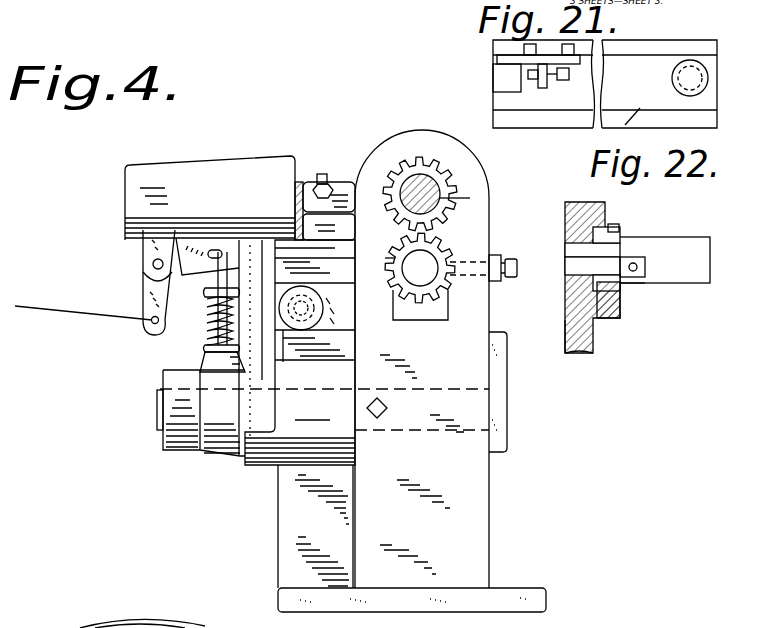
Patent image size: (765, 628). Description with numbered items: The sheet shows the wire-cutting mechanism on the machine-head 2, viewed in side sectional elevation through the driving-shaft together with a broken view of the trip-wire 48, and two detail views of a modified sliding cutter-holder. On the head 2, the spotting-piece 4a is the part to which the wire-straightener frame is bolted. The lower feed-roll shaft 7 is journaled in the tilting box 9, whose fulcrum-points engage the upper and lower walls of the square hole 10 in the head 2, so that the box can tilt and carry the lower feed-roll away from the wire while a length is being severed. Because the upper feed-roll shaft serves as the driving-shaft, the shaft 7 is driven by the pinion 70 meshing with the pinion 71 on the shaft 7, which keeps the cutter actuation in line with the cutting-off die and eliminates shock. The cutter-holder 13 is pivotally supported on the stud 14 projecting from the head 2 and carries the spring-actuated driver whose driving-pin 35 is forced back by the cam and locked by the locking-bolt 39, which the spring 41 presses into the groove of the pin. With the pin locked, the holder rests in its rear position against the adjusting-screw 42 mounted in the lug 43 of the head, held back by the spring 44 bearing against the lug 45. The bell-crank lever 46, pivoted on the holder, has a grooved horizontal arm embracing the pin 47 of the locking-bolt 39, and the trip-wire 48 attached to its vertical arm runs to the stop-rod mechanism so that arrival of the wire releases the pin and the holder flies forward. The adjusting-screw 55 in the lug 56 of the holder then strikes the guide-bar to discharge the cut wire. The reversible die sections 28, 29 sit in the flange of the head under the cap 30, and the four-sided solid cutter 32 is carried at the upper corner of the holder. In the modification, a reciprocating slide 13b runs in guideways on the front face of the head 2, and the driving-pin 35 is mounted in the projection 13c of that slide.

In FIG. 4, the machine-head 2 is at (470, 148).
In FIG. 22, the machine-head 2 is at (565, 222).
In FIG. 4, the spotting-piece 4a is at (507, 370).
In FIG. 22, the spotting-piece 4a is at (556, 344).
In FIG. 4, the lower feed-roll shaft 7 is at (420, 268).
In FIG. 4, the tilting box 9 is at (457, 193).
In FIG. 4, the square hole 10 is at (444, 314).
In FIG. 4, the cutter-holder 13 is at (240, 310).
In FIG. 21, the reciprocating slide 13b is at (612, 108).
In FIG. 22, the reciprocating slide 13b is at (600, 290).
In FIG. 21, the projection of the slide 13c is at (672, 78).
In FIG. 22, the projection of the slide 13c is at (704, 230).
In FIG. 4, the stud 14 is at (157, 410).
In FIG. 22, the wire-cutting die section 28 is at (568, 250).
In FIG. 22, the wire-cutting die section 29 is at (568, 266).
In FIG. 21, the cap 30 is at (500, 58).
In FIG. 22, the cap 30 is at (616, 224).
In FIG. 21, the solid cutter 32 is at (493, 70).
In FIG. 22, the solid cutter 32 is at (624, 236).
In FIG. 4, the driving-pin 35 is at (300, 182).
In FIG. 21, the driving-pin 35 is at (672, 96).
In FIG. 4, the locking-bolt 39 is at (212, 290).
In FIG. 4, the spring 41 is at (208, 325).
In FIG. 4, the adjusting-screw 42 is at (326, 172).
In FIG. 4, the lug 43 is at (338, 182).
In FIG. 4, the spring 44 is at (325, 308).
In FIG. 4, the lug 45 is at (287, 332).
In FIG. 4, the bell-crank lever 46 is at (140, 282).
In FIG. 4, the pin 47 is at (224, 254).
In FIG. 4, the trip-wire 48 is at (83, 305).
In FIG. 21, the adjusting-screw 55 is at (562, 80).
In FIG. 22, the adjusting-screw 55 is at (638, 267).
In FIG. 21, the lug 56 is at (542, 88).
In FIG. 22, the lug 56 is at (635, 285).
In FIG. 4, the pinion 70 is at (448, 184).
In FIG. 4, the pinion 71 is at (389, 256).